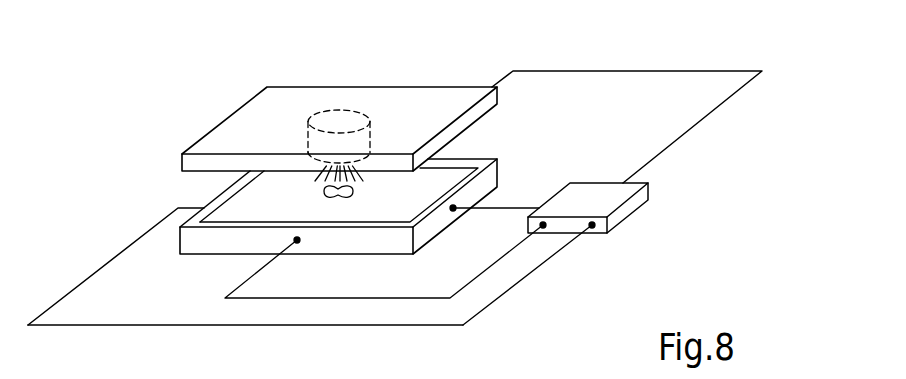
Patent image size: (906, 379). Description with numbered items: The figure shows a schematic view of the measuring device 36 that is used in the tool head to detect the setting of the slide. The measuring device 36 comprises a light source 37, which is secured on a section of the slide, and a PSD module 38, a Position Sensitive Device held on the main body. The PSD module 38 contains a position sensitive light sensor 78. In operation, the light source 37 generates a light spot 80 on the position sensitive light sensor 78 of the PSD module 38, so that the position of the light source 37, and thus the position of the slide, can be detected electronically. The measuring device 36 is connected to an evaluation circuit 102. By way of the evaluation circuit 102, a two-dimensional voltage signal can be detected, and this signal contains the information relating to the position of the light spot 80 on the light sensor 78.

The measuring device 36 is at (170, 101).
The light source 37 is at (342, 112).
The PSD module 38 is at (195, 249).
The position sensitive light sensor 78 is at (235, 205).
The light spot 80 is at (343, 200).
The evaluation circuit 102 is at (585, 188).